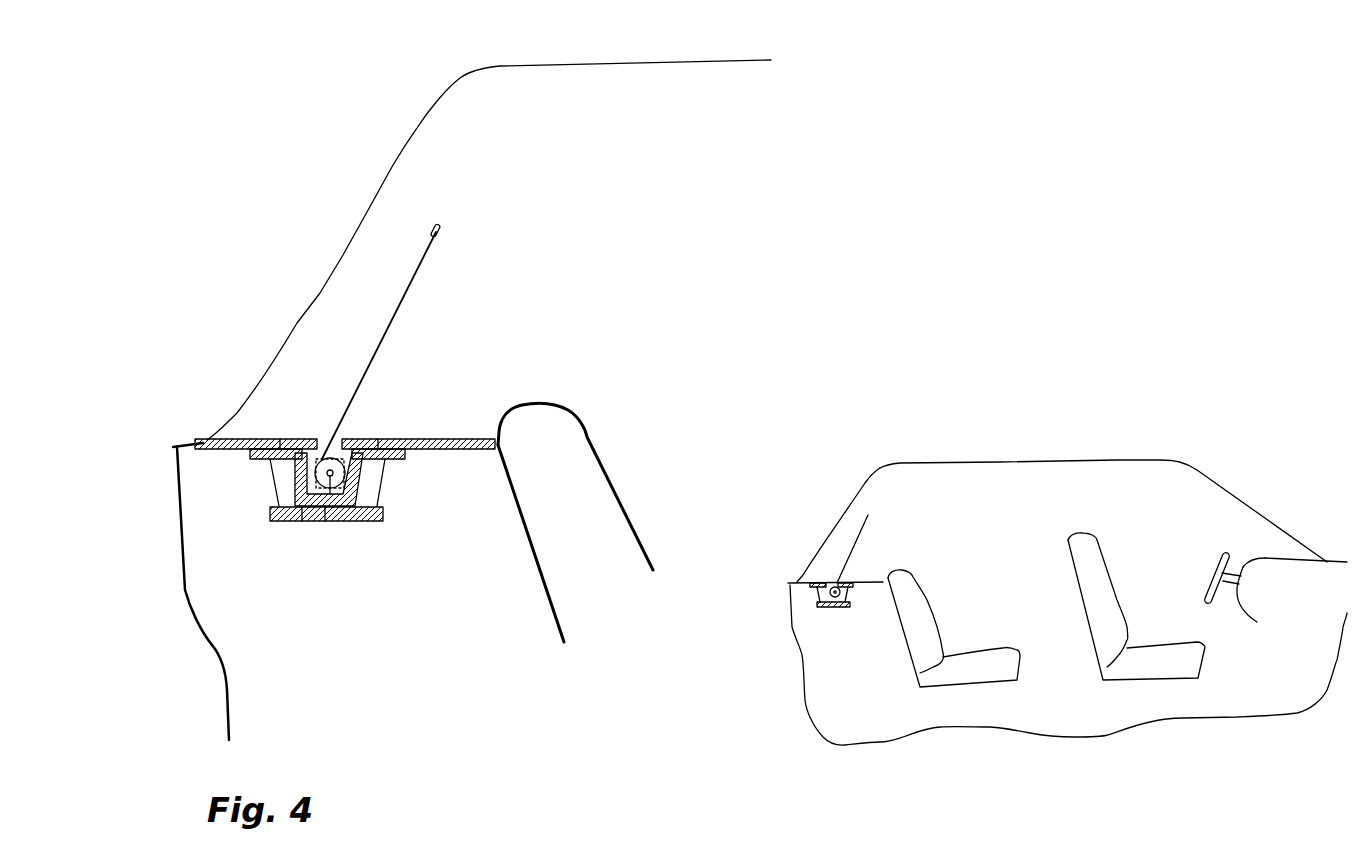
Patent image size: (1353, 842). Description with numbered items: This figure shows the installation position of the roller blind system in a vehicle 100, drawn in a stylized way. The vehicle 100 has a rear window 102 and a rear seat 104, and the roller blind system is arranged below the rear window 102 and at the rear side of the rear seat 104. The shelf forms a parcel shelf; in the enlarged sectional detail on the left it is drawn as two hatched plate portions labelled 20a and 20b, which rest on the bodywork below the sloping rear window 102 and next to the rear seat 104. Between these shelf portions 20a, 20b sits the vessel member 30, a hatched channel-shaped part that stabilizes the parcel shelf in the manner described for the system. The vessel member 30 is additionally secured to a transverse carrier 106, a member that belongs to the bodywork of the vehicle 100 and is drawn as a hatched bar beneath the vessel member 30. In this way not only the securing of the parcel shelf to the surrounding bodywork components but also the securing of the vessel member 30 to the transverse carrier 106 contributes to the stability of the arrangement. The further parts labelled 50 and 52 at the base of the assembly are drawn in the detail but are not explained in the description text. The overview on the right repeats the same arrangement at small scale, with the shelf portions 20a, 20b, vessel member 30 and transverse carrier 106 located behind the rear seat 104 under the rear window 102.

The vehicle 100 is at (993, 446).
The rear window 102 is at (321, 294).
The rear seat 104 is at (545, 458).
The transverse carrier 106 is at (350, 521).
The first mounting plate 20a is at (427, 449).
The second mounting plate 20b is at (242, 450).
The vessel member 30 is at (355, 480).
The first fastener 50 is at (298, 523).
The second fastener 52 is at (335, 523).